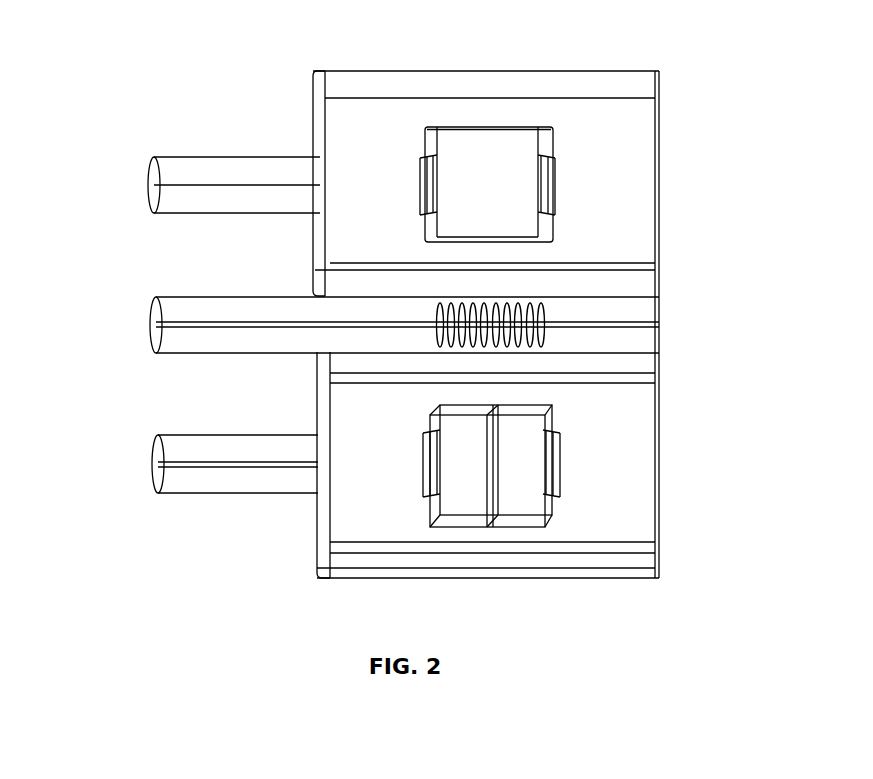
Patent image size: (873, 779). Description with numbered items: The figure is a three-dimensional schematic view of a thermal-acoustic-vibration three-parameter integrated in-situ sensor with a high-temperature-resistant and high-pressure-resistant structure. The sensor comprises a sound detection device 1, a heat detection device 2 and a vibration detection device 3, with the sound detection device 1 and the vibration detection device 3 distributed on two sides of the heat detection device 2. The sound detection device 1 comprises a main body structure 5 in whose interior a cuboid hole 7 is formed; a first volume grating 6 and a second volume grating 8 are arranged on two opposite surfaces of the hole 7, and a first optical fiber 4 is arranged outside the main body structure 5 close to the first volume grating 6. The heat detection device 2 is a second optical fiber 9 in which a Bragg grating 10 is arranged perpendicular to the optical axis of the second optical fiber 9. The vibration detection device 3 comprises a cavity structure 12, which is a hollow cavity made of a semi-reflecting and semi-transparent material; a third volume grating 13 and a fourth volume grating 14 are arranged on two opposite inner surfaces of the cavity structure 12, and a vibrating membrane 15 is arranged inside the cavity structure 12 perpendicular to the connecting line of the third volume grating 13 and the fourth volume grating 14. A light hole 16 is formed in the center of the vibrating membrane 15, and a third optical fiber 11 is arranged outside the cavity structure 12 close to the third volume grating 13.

The sound detection device 1 is at (544, 163).
The heat detection device 2 is at (700, 324).
The vibration detection device 3 is at (545, 475).
The first optical fiber 4 is at (211, 137).
The main body structure 5 is at (290, 173).
The first volume grating 6 is at (378, 110).
The hole 7 is at (485, 123).
The second volume grating 8 is at (594, 110).
The second optical fiber 9 is at (339, 277).
The Bragg grating 10 is at (604, 266).
The third optical fiber 11 is at (170, 416).
The cavity structure 12 is at (237, 481).
The third volume grating 13 is at (349, 520).
The fourth volume grating 14 is at (656, 520).
The vibrating membrane 15 is at (442, 507).
The light hole 16 is at (606, 441).